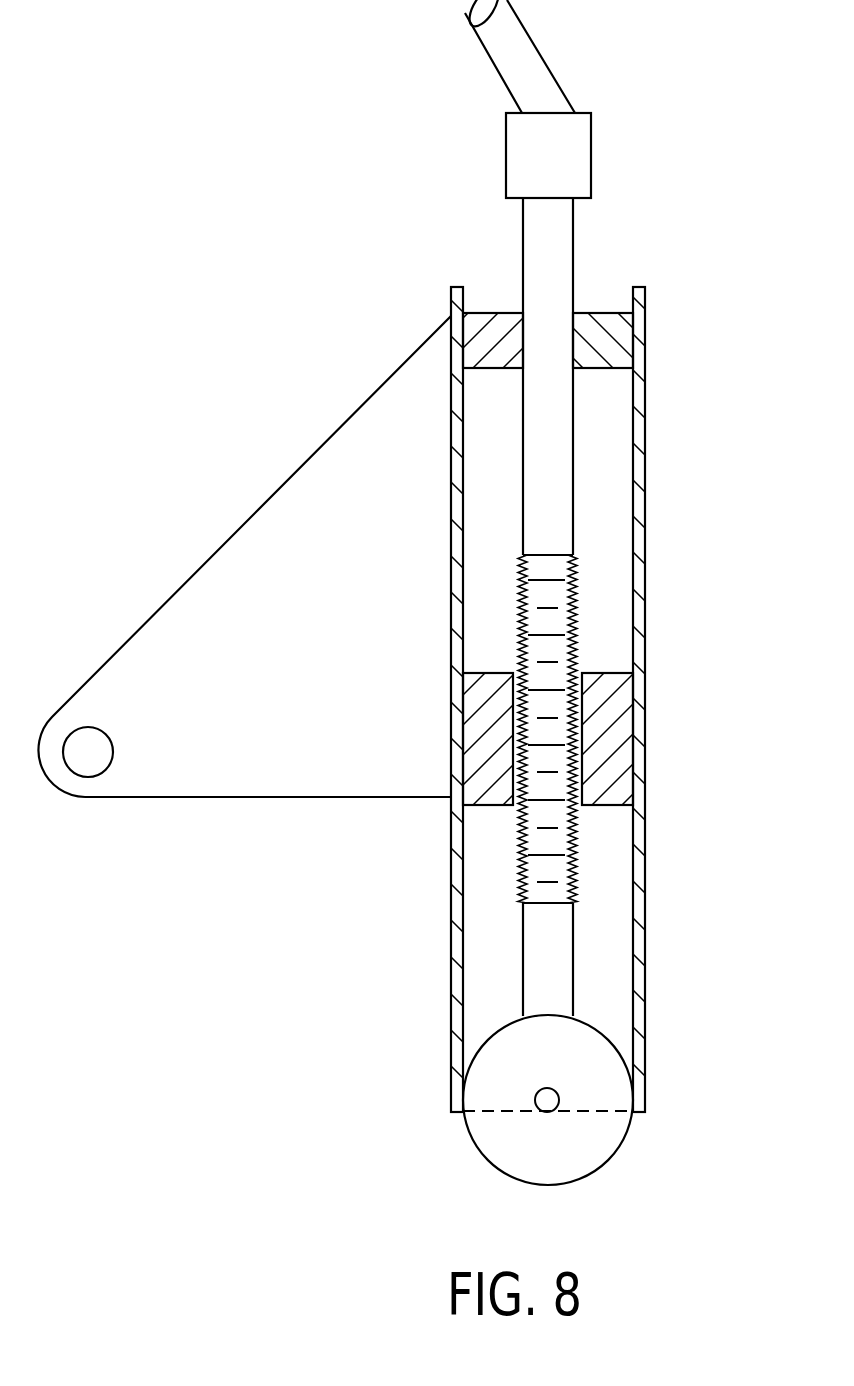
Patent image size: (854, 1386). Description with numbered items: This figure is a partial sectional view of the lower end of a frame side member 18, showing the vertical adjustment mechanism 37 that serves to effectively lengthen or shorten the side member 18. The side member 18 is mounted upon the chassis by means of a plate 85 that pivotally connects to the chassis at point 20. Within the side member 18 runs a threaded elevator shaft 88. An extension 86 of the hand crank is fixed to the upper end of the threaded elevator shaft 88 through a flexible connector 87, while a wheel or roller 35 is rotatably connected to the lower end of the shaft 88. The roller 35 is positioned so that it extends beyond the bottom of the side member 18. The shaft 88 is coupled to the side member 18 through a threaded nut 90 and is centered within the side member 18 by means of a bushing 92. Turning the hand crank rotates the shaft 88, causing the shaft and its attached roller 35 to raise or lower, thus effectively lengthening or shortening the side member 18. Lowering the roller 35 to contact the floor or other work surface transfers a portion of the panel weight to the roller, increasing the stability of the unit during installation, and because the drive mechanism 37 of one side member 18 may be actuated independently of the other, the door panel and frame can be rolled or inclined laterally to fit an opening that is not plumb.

The frame side member 18 is at (457, 933).
The pivot point 20 is at (92, 752).
The wheel or roller 35 is at (565, 1160).
The threaded drive mechanism 37 is at (683, 655).
The plate 85 is at (275, 547).
The extension of hand crank 86 is at (525, 67).
The flexible connector 87 is at (570, 167).
The threaded elevator shaft 88 is at (548, 624).
The threaded nut 90 is at (610, 768).
The bushing 92 is at (610, 345).